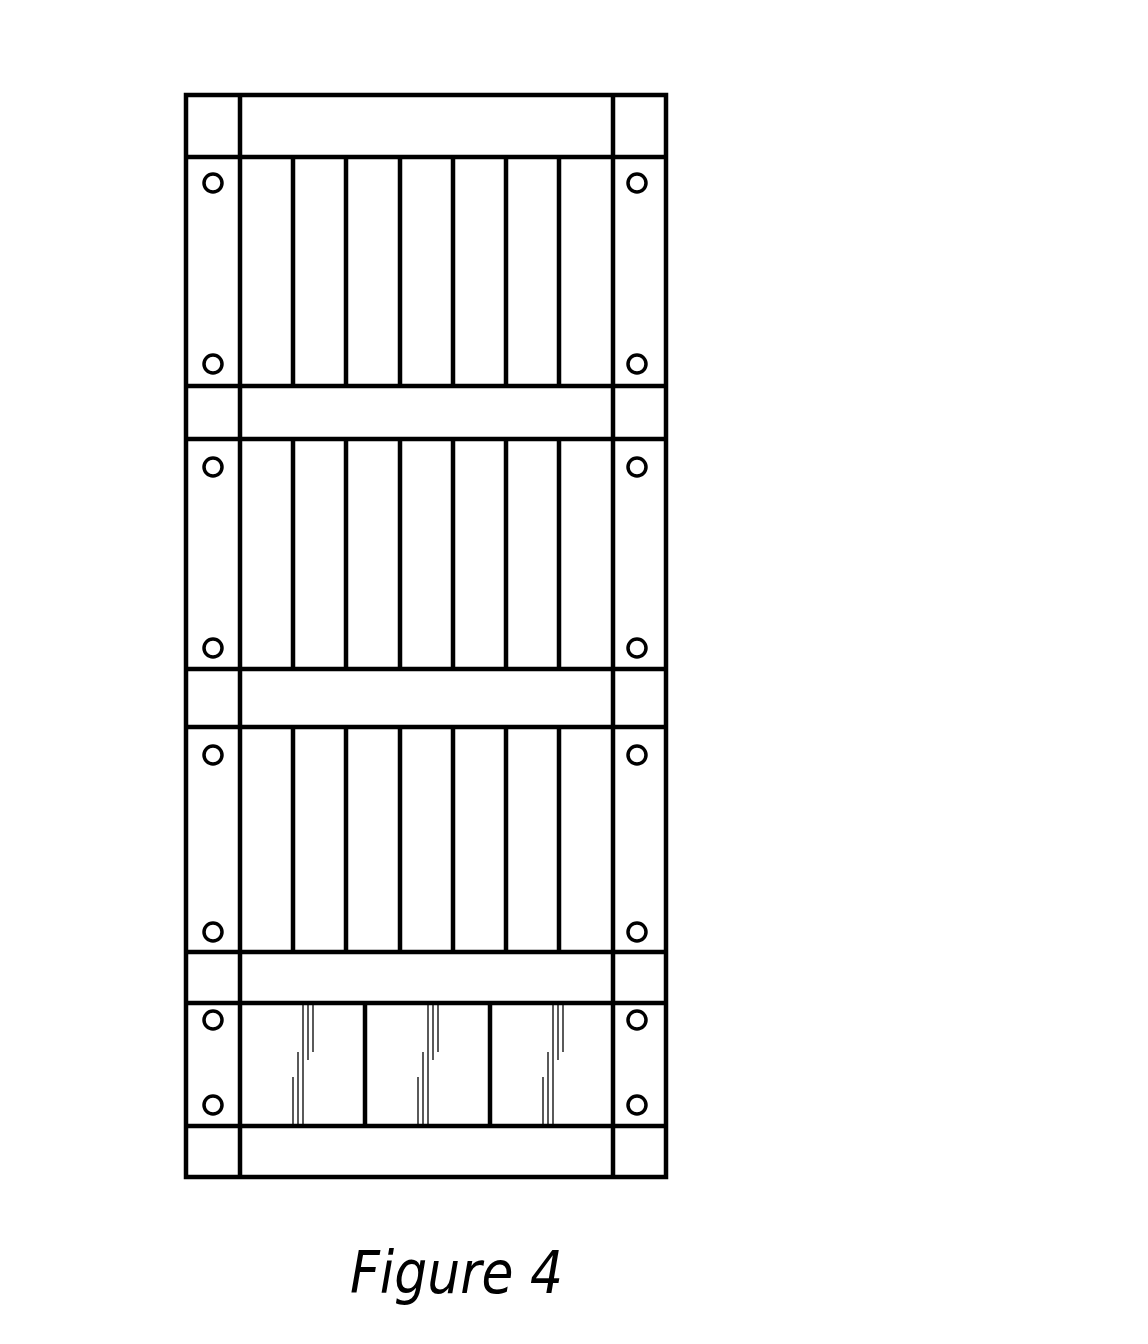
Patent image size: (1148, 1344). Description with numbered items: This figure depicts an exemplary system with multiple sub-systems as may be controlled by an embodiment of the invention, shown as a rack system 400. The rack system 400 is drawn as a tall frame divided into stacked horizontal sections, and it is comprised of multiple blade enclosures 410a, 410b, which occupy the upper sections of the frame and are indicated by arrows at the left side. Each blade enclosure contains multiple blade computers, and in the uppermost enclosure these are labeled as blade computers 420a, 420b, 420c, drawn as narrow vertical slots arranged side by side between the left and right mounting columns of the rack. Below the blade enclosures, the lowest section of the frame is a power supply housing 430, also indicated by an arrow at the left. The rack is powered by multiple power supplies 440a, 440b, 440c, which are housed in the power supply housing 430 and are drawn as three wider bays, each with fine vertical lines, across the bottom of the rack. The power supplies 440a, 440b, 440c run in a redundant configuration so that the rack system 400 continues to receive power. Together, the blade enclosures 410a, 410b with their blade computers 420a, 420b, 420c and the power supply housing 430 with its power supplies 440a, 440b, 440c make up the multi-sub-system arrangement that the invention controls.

The rack system 400 is at (494, 601).
The blade enclosure 410a is at (494, 271).
The blade enclosure 410b is at (172, 518).
The blade computer 420a is at (580, 225).
The blade computer 420b is at (538, 283).
The blade computer 420c is at (483, 338).
The power supply housing 430 is at (502, 1062).
The power supply 440a is at (340, 1047).
The power supply 440b is at (578, 1082).
The power supply 440c is at (452, 1097).